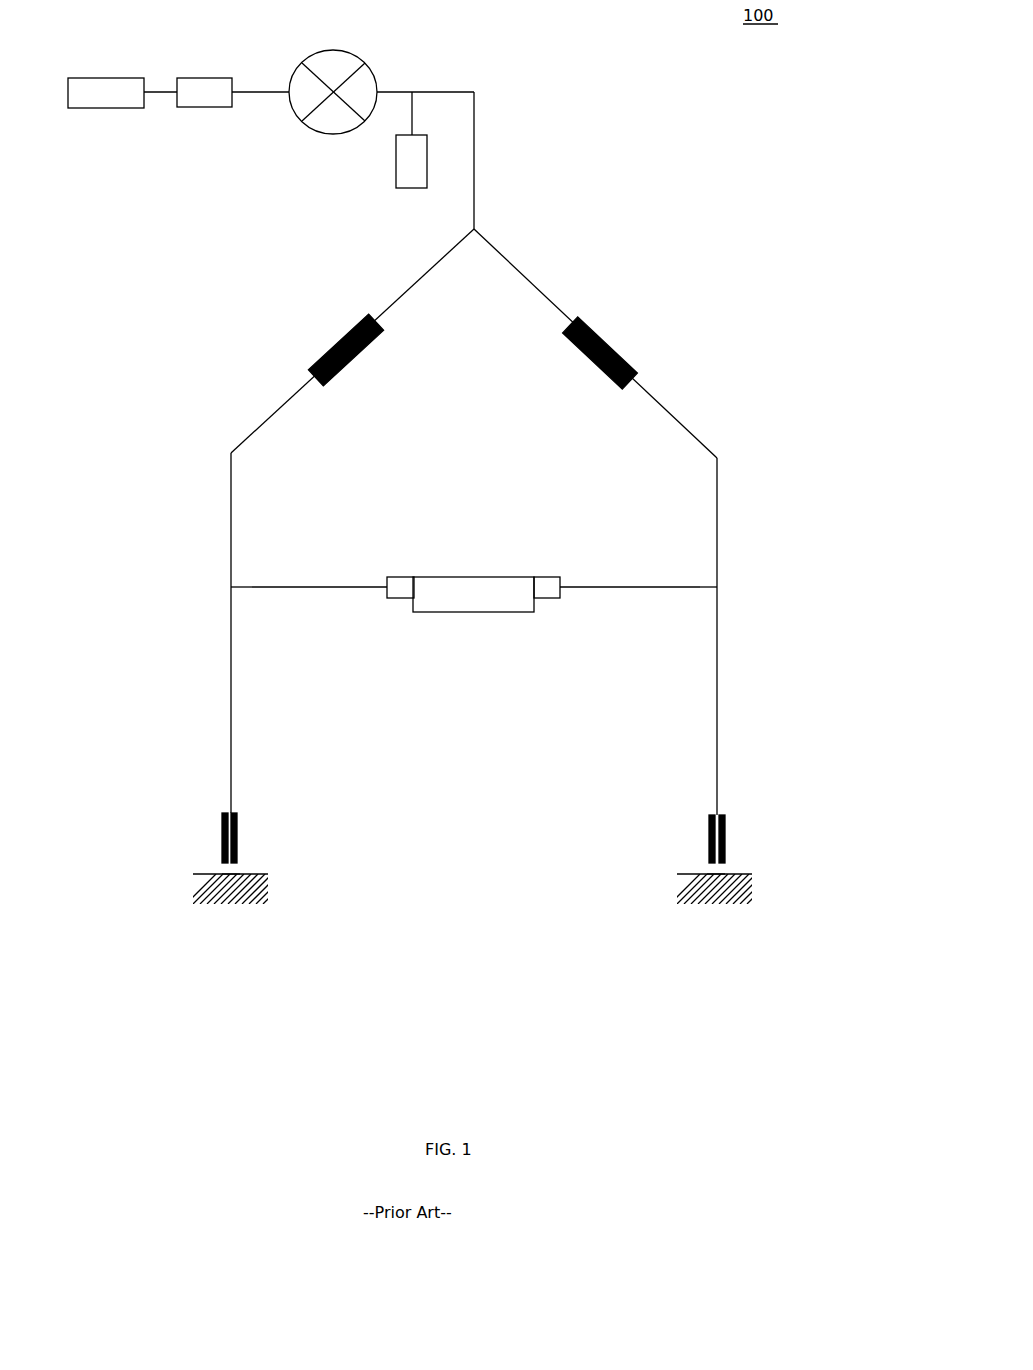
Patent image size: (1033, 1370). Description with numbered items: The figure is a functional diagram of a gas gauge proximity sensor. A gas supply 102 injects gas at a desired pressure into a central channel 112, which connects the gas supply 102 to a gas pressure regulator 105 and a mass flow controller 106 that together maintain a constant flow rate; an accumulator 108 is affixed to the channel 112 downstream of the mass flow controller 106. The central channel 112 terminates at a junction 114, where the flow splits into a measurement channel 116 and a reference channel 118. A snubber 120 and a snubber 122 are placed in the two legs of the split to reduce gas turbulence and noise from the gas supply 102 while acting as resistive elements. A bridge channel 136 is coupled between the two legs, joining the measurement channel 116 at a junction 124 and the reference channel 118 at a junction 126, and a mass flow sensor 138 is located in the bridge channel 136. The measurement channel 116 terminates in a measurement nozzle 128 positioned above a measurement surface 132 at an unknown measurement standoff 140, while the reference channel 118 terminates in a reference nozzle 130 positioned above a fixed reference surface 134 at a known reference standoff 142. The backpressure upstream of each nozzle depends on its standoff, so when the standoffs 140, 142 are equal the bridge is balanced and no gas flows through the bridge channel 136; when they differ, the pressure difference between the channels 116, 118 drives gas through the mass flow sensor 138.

The gas supply 102 is at (110, 78).
The gas pressure regulator 105 is at (200, 78).
The mass flow controller 106 is at (331, 50).
The accumulator 108 is at (414, 188).
The central channel 112 is at (238, 91).
The junction 114 is at (505, 206).
The measurement channel 116 is at (410, 287).
The reference channel 118 is at (507, 259).
The snubber 120 is at (370, 350).
The snubber 122 is at (615, 356).
The junction 124 is at (230, 587).
The junction 126 is at (718, 587).
The measurement nozzle 128 is at (222, 822).
The reference nozzle 130 is at (726, 822).
The measurement surface 132 is at (268, 874).
The reference surface 134 is at (752, 874).
The bridge channel 136 is at (308, 587).
The mass flow sensor 138 is at (485, 577).
The measurement standoff 140 is at (232, 871).
The reference standoff 142 is at (716, 871).